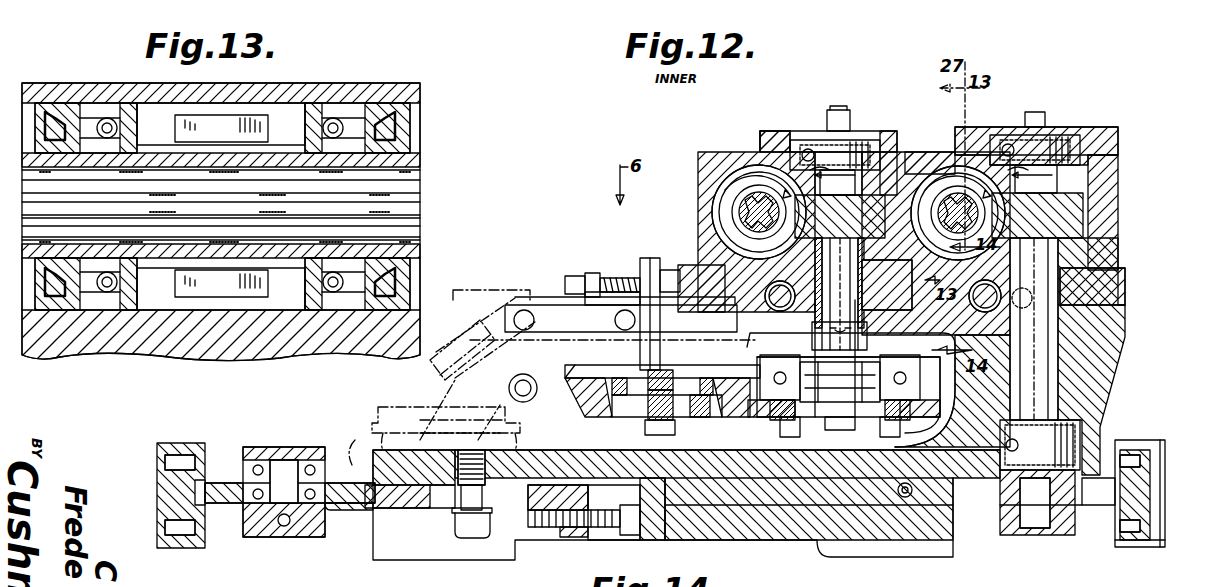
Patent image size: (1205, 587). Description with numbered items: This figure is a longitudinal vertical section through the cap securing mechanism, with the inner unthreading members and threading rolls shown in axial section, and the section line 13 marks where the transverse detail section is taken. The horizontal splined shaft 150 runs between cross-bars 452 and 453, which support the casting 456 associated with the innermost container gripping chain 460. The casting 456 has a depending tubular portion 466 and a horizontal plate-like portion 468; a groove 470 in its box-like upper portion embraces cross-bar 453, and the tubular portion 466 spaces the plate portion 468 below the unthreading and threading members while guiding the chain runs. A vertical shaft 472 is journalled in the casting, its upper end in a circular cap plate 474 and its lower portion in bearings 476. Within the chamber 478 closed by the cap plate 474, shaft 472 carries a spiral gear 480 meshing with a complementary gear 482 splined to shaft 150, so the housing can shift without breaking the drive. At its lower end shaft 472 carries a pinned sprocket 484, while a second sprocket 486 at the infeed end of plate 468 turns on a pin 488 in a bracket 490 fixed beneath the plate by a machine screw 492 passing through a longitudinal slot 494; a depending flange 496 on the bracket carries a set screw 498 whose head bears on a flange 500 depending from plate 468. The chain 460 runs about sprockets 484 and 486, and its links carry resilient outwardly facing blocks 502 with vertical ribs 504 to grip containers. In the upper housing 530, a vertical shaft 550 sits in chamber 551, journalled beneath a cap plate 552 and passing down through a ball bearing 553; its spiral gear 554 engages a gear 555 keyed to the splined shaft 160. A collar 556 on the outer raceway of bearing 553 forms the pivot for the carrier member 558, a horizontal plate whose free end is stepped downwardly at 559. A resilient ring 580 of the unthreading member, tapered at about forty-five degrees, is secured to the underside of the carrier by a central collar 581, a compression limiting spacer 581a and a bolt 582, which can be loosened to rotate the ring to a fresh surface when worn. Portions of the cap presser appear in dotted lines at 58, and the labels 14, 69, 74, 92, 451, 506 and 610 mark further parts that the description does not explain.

In FIG. 12, the section line 13 is at (985, 296).
In FIG. 12, the curved guard plate 14 is at (851, 390).
In FIG. 12, the clamp bracket 58 is at (483, 335).
In FIG. 12, the adjusting screw 69 is at (645, 276).
In FIG. 12, the stop bar 74 is at (648, 258).
In FIG. 12, the clutch assembly 92 is at (943, 422).
In FIG. 13, the horizontal shaft 150 is at (420, 210).
In FIG. 12, the horizontal shaft 150 is at (955, 195).
In FIG. 12, the splined shaft 160 is at (745, 190).
In FIG. 12, the bracket block 451 is at (662, 270).
In FIG. 12, the cross-bar 452 is at (915, 275).
In FIG. 12, the cross-bar 453 is at (1105, 285).
In FIG. 13, the casting 456 is at (372, 100).
In FIG. 12, the casting 456 is at (1100, 190).
In FIG. 12, the container gripping chain 460 is at (1130, 545).
In FIG. 12, the tubular portion 466 is at (1095, 395).
In FIG. 12, the plate-like portion 468 is at (782, 478).
In FIG. 12, the groove 470 is at (1125, 306).
In FIG. 12, the vertical shaft 472 is at (1048, 360).
In FIG. 12, the cap plate 474 is at (1105, 127).
In FIG. 12, the bearings 476 is at (1082, 430).
In FIG. 13, the chamber 478 is at (150, 103).
In FIG. 12, the chamber 478 is at (1075, 170).
In FIG. 12, the spiral gear 480 is at (1083, 215).
In FIG. 13, the complementary gear 482 is at (270, 115).
In FIG. 12, the complementary gear 482 is at (912, 178).
In FIG. 12, the sprocket 484 is at (1010, 535).
In FIG. 12, the sprocket 486 is at (245, 483).
In FIG. 12, the pin 488 is at (284, 537).
In FIG. 12, the bracket 490 is at (355, 515).
In FIG. 12, the machine screw 492 is at (470, 540).
In FIG. 12, the slot 494 is at (430, 510).
In FIG. 12, the depending flange 496 is at (572, 530).
In FIG. 12, the set screw 498 is at (628, 535).
In FIG. 12, the flange 500 is at (655, 520).
In FIG. 12, the blocks 502 is at (1133, 450).
In FIG. 12, the ribs 504 is at (1162, 470).
In FIG. 12, the spindle 506 is at (1000, 300).
In FIG. 12, the housing 530 is at (718, 153).
In FIG. 12, the vertical shaft 550 is at (848, 200).
In FIG. 12, the chamber 551 is at (790, 175).
In FIG. 12, the cap plate 552 is at (845, 145).
In FIG. 12, the bearing 553 is at (839, 320).
In FIG. 12, the spiral gear 554 is at (840, 294).
In FIG. 12, the gear 555 is at (735, 200).
In FIG. 12, the collar 556 is at (768, 296).
In FIG. 12, the carrier member 558 is at (568, 385).
In FIG. 12, the step 559 is at (735, 330).
In FIG. 12, the ring 580 is at (590, 395).
In FIG. 12, the central collar 581 is at (700, 418).
In FIG. 12, the compression limiting spacer 581a is at (655, 378).
In FIG. 12, the bolt 582 is at (665, 420).
In FIG. 12, the shaft sleeve 610 is at (798, 283).